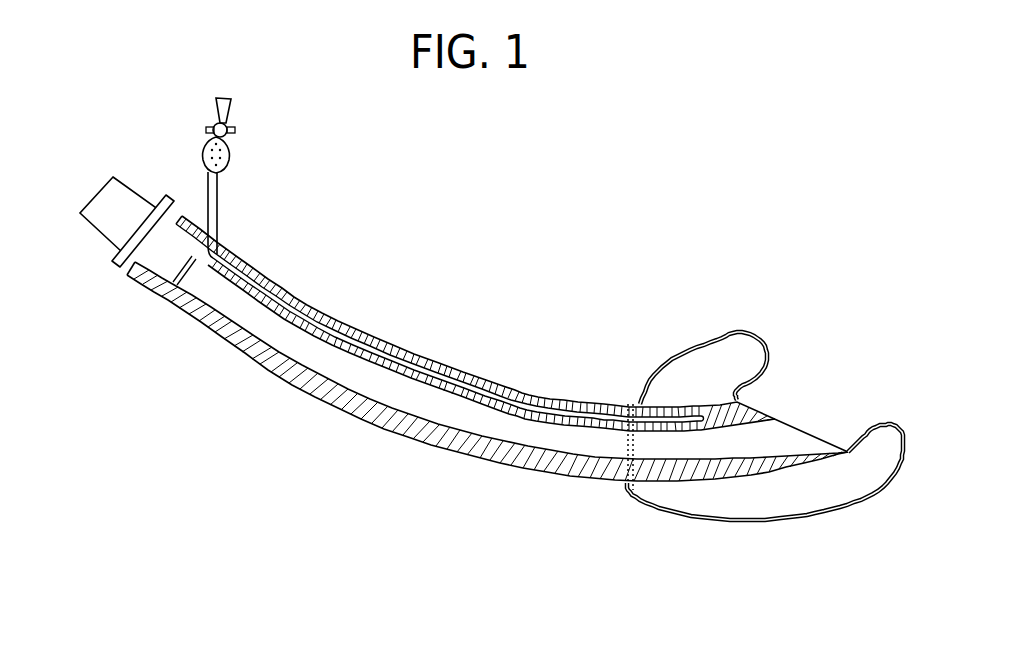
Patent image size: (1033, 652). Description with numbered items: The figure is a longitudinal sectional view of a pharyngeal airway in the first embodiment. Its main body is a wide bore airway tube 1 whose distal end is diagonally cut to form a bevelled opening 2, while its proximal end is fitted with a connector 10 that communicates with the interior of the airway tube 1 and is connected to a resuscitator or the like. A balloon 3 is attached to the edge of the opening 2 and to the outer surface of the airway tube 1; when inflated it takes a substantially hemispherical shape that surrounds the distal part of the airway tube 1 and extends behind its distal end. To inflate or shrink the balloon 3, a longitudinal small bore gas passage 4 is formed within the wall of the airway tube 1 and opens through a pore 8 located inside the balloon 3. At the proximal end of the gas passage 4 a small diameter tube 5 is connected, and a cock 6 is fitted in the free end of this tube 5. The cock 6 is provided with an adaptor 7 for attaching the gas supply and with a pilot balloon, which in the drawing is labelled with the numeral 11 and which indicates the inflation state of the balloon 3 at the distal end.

The airway tube 1 is at (287, 387).
The bevelled opening 2 is at (787, 413).
The balloon 3 is at (733, 332).
The gas passage 4 is at (343, 335).
The tube 5 is at (222, 220).
The cock 6 is at (238, 130).
The adaptor 7 is at (229, 103).
The pore 8 is at (705, 405).
The connector 10 is at (107, 224).
The pilot balloon 11 is at (232, 162).